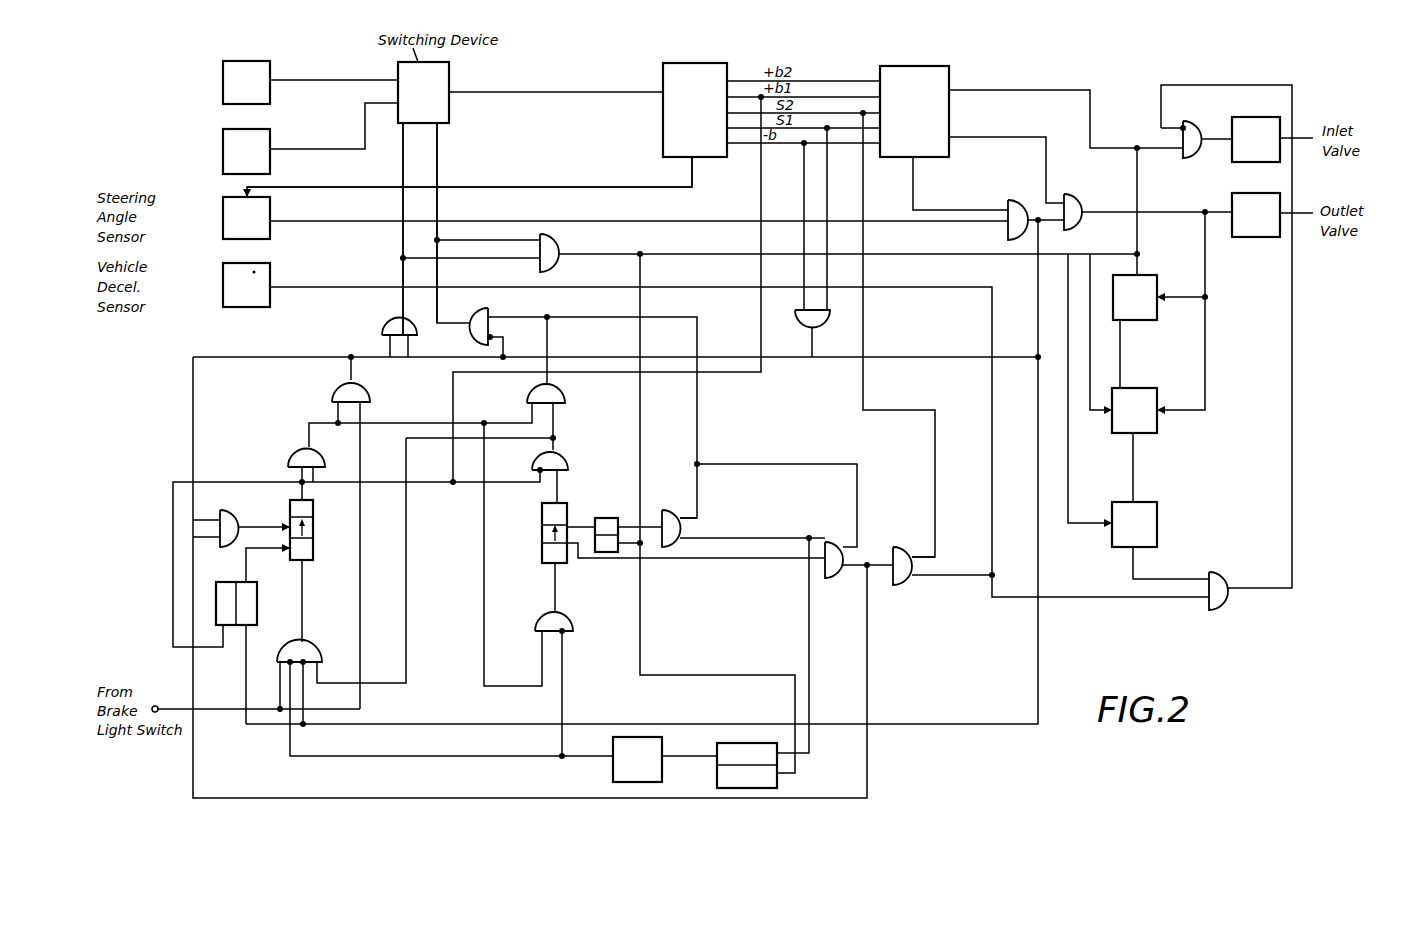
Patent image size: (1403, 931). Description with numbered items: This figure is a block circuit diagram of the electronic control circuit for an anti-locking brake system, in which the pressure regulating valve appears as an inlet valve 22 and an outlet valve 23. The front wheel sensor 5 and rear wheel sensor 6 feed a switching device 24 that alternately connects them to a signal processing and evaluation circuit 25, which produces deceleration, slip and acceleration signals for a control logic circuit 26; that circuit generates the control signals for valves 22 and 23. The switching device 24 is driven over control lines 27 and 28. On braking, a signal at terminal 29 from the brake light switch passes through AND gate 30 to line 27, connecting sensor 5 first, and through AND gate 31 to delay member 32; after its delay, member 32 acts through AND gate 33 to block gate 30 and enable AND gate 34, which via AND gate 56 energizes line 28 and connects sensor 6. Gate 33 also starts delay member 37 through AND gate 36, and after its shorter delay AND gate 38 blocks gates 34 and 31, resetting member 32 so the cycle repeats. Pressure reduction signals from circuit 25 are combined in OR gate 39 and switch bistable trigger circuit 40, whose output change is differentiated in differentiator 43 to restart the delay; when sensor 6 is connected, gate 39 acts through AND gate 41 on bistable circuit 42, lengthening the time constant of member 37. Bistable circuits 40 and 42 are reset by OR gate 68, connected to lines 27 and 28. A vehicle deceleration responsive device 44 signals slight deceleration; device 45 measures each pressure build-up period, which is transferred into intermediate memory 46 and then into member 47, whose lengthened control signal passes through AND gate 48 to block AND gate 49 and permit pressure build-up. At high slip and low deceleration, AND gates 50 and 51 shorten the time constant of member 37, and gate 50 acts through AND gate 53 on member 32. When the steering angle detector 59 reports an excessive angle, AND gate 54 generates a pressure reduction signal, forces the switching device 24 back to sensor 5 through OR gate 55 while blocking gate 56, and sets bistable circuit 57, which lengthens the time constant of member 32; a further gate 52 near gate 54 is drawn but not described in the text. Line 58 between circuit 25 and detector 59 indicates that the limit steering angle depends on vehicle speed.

The sensor 5 is at (223, 80).
The sensor 6 is at (223, 149).
The inlet valve 22 is at (1245, 158).
The outlet valve 23 is at (1253, 232).
The switching device 24 is at (440, 78).
The signal processing and evaluation circuit 25 is at (672, 77).
The control logic circuit 26 is at (949, 80).
The control line 27 is at (403, 167).
The control line 28 is at (437, 167).
The terminal 29 is at (172, 701).
The AND gate 30 is at (370, 393).
The AND gate 31 is at (303, 650).
The delay member 32 is at (313, 530).
The AND gate 33 is at (290, 451).
The AND gate 34 is at (563, 393).
The AND gate 36 is at (545, 620).
The delay member 37 is at (542, 540).
The AND gate 38 is at (568, 457).
The OR gate 39 is at (808, 326).
The bistable trigger circuit 40 is at (717, 770).
The AND gate 41 is at (668, 505).
The bistable circuit 42 is at (606, 521).
The differentiator 43 is at (613, 767).
The vehicle deceleration responsive device 44 is at (223, 286).
The device 45 is at (1145, 313).
The intermediate memory 46 is at (1143, 425).
The member 47 is at (1157, 523).
The AND gate 48 is at (1218, 593).
The AND gate 49 is at (1195, 127).
The AND gate 50 is at (900, 549).
The AND gate 51 is at (833, 544).
The OR gate 52 is at (1082, 206).
The AND gate 53 is at (232, 523).
The AND gate 54 is at (1016, 199).
The OR gate 55 is at (383, 321).
The AND gate 56 is at (470, 336).
The bistable circuit 57 is at (257, 605).
The line 58 is at (620, 187).
The steering angle detector 59 is at (223, 219).
The OR gate 68 is at (560, 243).